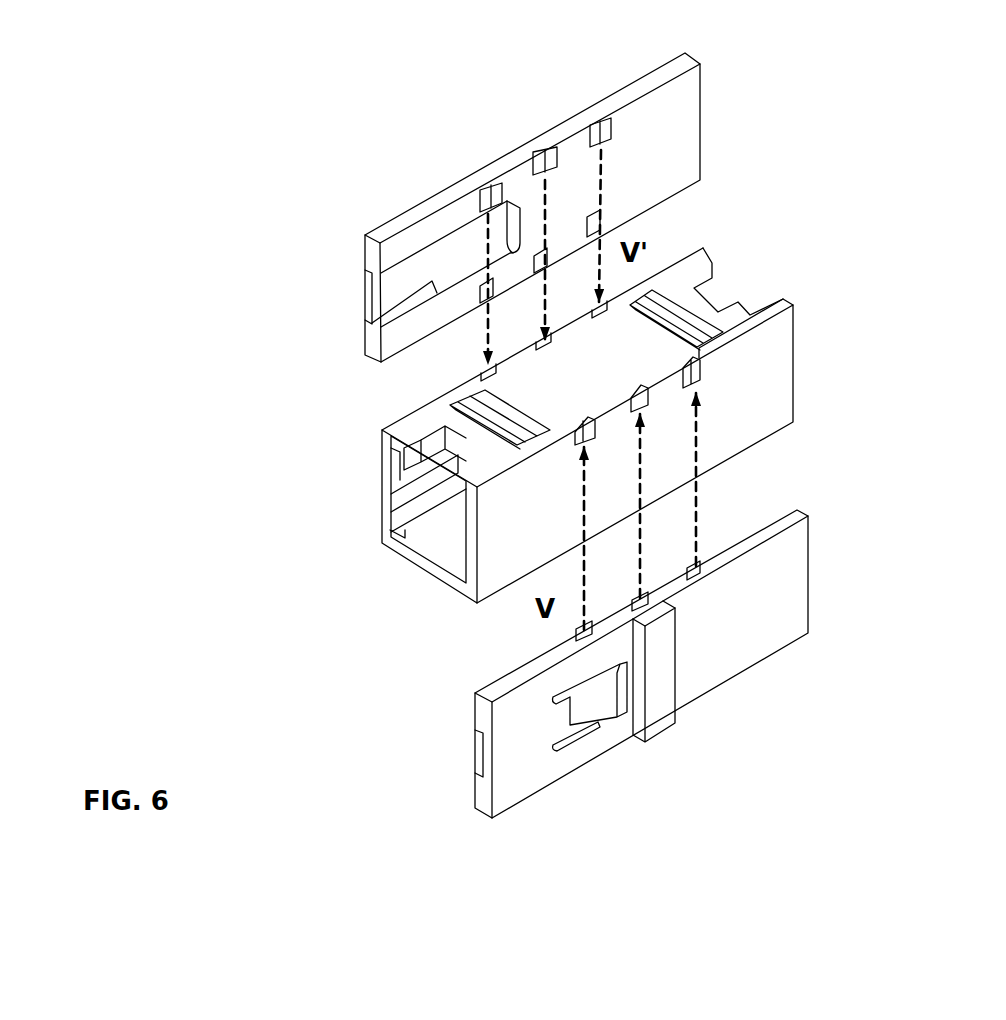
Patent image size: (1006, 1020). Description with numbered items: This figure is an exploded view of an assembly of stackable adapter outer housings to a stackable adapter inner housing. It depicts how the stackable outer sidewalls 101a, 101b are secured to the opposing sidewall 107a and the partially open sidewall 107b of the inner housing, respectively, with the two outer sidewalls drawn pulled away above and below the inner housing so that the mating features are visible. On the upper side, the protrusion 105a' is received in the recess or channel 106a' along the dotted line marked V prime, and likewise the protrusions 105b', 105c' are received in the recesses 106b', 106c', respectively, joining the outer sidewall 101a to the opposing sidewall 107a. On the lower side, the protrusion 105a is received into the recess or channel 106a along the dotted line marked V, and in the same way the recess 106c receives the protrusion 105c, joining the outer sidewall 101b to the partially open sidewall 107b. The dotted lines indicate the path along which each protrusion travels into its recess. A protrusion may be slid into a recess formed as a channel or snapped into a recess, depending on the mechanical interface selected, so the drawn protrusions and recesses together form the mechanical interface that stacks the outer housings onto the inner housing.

The stackable outer sidewall 101a is at (532, 207).
The stackable outer sidewall 101b is at (641, 664).
The opposing sidewall 107a is at (730, 413).
The partially open sidewall 107b is at (378, 420).
The protrusion 105a is at (797, 347).
The protrusion 105c is at (545, 474).
The protrusion 105a' is at (717, 116).
The protrusion 105b' is at (471, 126).
The protrusion 105c' is at (356, 209).
The recess or channel 106a is at (779, 526).
The recess 106c is at (473, 653).
The recess or channel 106a' is at (721, 259).
The recess 106b' is at (578, 371).
The recess 106c' is at (425, 382).